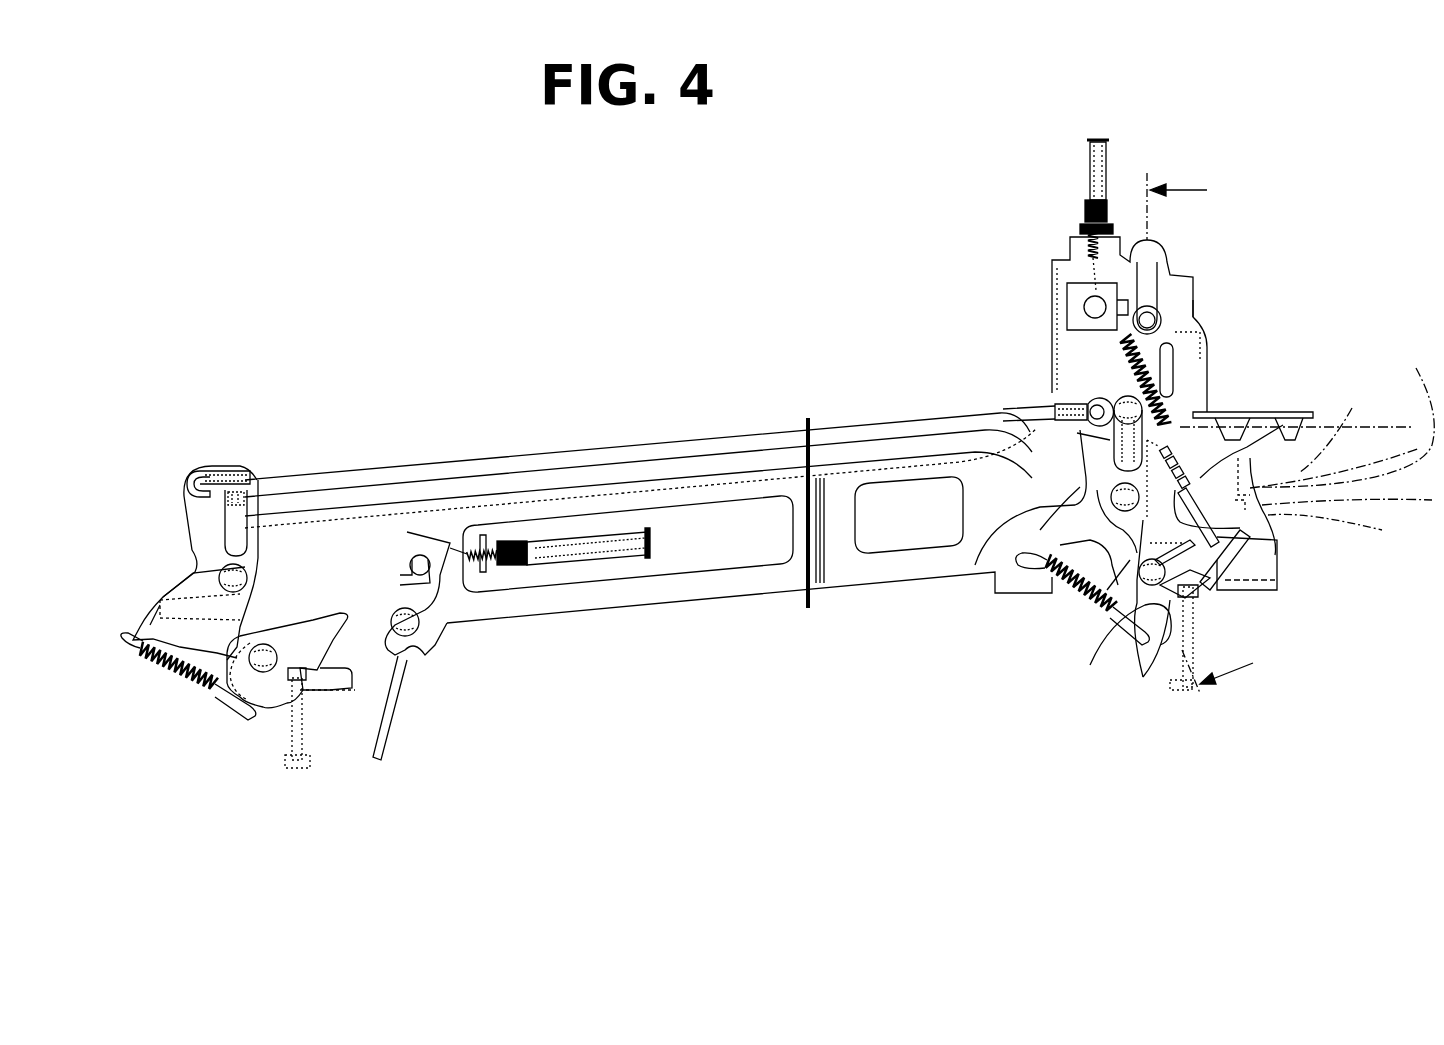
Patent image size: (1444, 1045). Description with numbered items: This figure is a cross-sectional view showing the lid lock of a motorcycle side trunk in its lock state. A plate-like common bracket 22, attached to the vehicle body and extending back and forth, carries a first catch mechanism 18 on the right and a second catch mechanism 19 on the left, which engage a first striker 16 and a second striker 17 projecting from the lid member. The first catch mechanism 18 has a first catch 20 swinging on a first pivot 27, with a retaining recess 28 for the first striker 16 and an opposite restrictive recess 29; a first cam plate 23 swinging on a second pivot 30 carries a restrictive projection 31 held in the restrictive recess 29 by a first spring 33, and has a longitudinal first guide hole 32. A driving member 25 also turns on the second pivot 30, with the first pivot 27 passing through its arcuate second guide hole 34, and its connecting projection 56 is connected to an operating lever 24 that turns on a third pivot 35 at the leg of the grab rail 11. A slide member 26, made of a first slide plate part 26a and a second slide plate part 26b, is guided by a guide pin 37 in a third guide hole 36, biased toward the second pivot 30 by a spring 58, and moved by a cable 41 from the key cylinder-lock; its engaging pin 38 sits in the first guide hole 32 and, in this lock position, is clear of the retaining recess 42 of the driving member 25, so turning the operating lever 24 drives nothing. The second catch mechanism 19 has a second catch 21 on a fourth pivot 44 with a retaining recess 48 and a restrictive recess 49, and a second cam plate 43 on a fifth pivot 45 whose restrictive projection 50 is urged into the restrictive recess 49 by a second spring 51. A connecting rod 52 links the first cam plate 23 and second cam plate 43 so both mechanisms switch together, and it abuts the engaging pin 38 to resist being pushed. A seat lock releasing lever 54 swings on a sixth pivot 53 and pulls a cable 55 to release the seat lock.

The grab rail 11 is at (1384, 420).
The first striker 16 is at (1190, 655).
The second striker 17 is at (290, 745).
The first catch mechanism 18 is at (1233, 562).
The second catch mechanism 19 is at (172, 562).
The first catch 20 is at (1160, 655).
The second catch 21 is at (308, 637).
The bracket 22 is at (705, 478).
The first cam plate 23 is at (1075, 515).
The operating lever 24 is at (1339, 424).
The driving member 25 is at (1255, 540).
The slide member 26 is at (1155, 246).
The first slide plate part 26a is at (1195, 340).
The second slide plate part 26b is at (1208, 390).
The first pivot 27 is at (1140, 640).
The retaining recess 28 is at (1180, 585).
The restrictive recess 29 is at (1070, 610).
The second pivot 30 is at (1118, 490).
The restrictive projection 31 is at (1125, 600).
The first guide hole 32 is at (1060, 418).
The first spring 33 is at (1022, 578).
The second guide hole 34 is at (1192, 585).
The third pivot 35 is at (1341, 538).
The third guide hole 36 is at (1158, 295).
The guide pin 37 is at (1160, 316).
The engaging pin 38 is at (1115, 388).
The cable 41 is at (1090, 160).
The retaining recess 42 is at (1045, 430).
The second cam plate 43 is at (185, 598).
The fourth pivot 44 is at (262, 672).
The fifth pivot 45 is at (230, 575).
The retaining recess 48 is at (343, 690).
The restrictive recess 49 is at (252, 653).
The restrictive projection 50 is at (232, 700).
The second spring 51 is at (163, 670).
The connecting rod 52 is at (612, 447).
The sixth pivot 53 is at (414, 634).
The seat lock releasing lever 54 is at (383, 737).
The cable 55 is at (570, 560).
The connecting projection 56 is at (1250, 455).
The spring 58 is at (1130, 333).